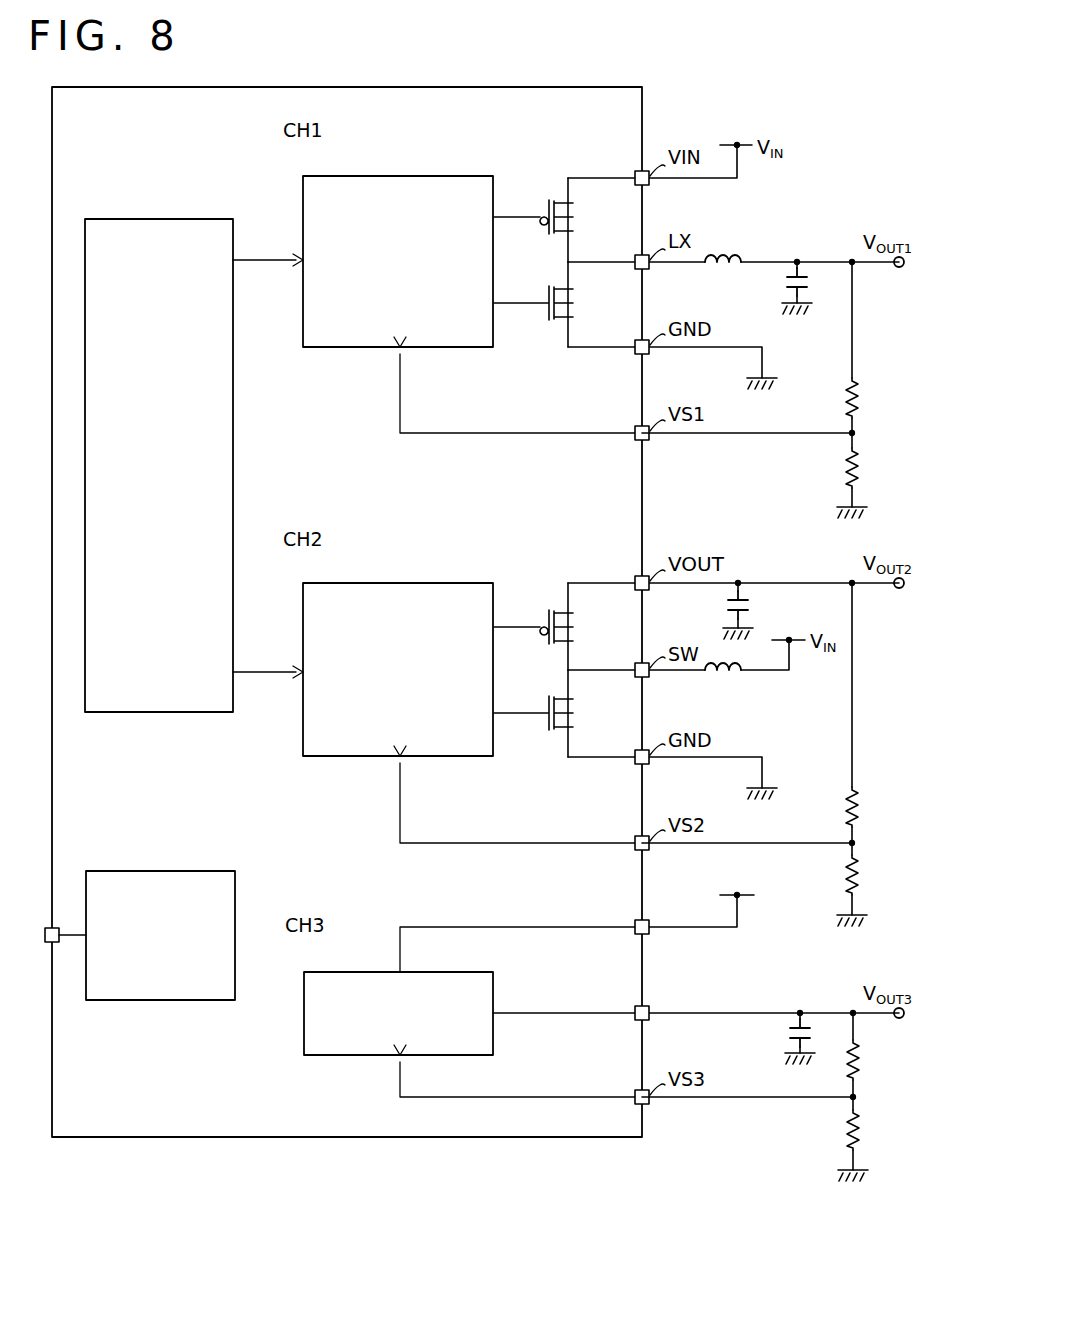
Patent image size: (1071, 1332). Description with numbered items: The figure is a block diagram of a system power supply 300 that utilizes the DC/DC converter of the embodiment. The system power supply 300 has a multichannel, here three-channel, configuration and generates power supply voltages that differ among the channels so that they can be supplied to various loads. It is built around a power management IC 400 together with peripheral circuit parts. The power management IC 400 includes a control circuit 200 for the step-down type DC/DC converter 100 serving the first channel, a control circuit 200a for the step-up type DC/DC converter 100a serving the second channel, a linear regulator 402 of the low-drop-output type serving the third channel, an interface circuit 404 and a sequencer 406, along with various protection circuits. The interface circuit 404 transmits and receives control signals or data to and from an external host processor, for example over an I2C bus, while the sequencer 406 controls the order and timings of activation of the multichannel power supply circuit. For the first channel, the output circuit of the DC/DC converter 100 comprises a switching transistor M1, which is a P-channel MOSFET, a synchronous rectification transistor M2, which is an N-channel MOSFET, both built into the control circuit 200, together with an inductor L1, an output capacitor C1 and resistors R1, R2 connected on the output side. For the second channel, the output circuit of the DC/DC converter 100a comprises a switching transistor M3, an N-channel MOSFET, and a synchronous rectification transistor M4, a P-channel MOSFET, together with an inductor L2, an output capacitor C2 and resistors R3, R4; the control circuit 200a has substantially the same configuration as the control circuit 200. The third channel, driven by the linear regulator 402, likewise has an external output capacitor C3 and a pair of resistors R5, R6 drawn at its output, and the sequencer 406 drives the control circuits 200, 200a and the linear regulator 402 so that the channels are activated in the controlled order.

The system power supply 300 is at (478, 1273).
The power management IC 400 is at (142, 1138).
The linear regulator 402 is at (338, 1057).
The interface circuit 404 is at (218, 855).
The sequencer 406 is at (197, 219).
The control circuit 200 is at (452, 176).
The control circuit 200a is at (452, 583).
The DC/DC converter 100 is at (787, 346).
The DC/DC converter 100a is at (794, 752).
The switching transistor M1 is at (574, 215).
The synchronous rectification transistor M2 is at (574, 302).
The switching transistor M3 is at (574, 712).
The synchronous rectification transistor M4 is at (574, 625).
The inductor L1 is at (719, 254).
The inductor L2 is at (718, 683).
The output capacitor C1 is at (787, 283).
The output capacitor C2 is at (726, 602).
The output capacitor C3 is at (788, 1033).
The resistor R1 is at (862, 398).
The resistor R2 is at (862, 468).
The resistor R3 is at (862, 807).
The resistor R4 is at (862, 875).
The feedback resistor R5 is at (863, 1060).
The feedback resistor R6 is at (863, 1130).